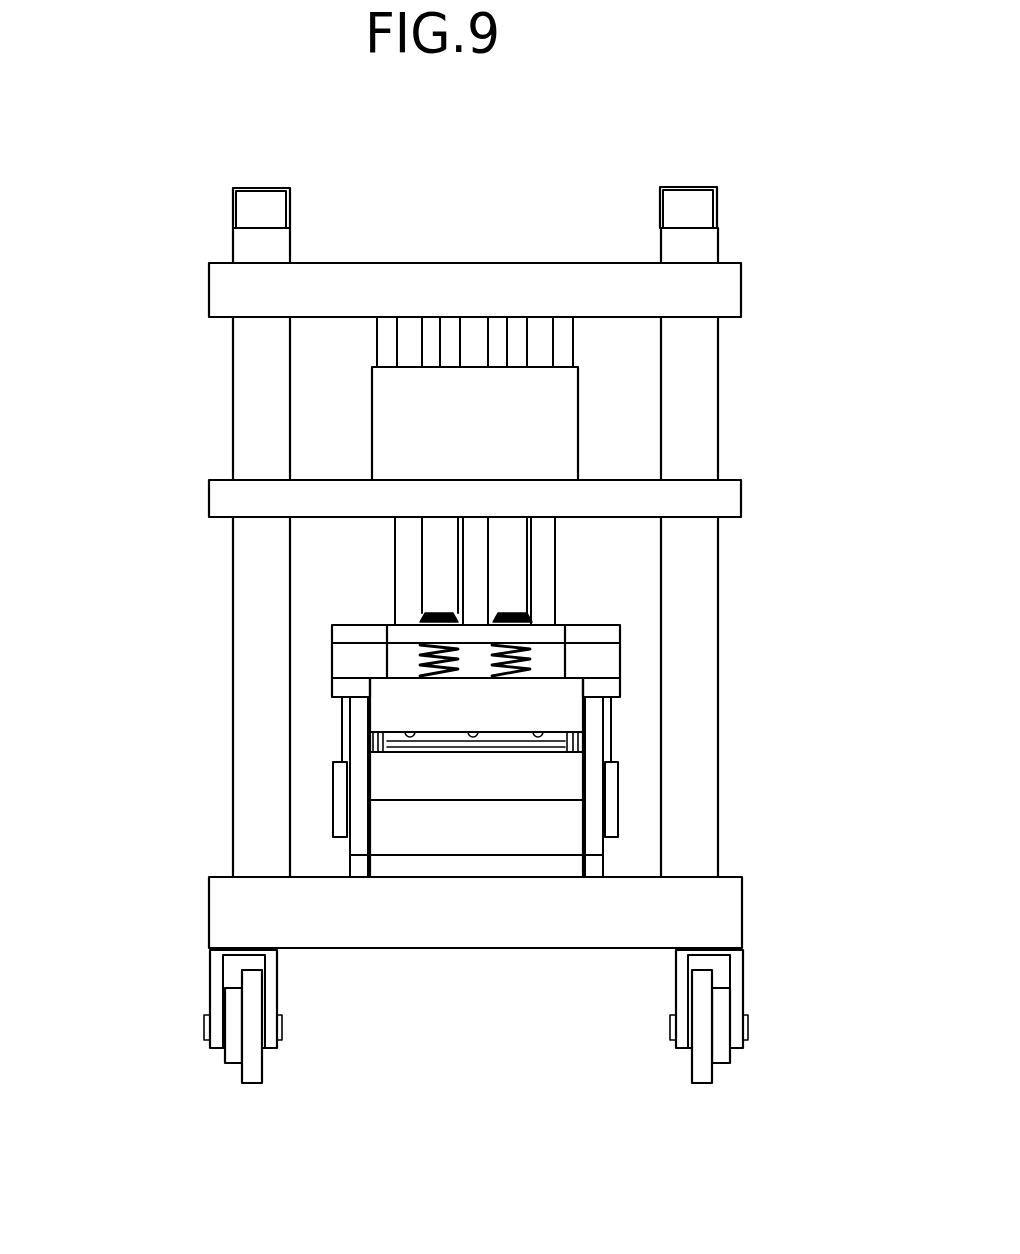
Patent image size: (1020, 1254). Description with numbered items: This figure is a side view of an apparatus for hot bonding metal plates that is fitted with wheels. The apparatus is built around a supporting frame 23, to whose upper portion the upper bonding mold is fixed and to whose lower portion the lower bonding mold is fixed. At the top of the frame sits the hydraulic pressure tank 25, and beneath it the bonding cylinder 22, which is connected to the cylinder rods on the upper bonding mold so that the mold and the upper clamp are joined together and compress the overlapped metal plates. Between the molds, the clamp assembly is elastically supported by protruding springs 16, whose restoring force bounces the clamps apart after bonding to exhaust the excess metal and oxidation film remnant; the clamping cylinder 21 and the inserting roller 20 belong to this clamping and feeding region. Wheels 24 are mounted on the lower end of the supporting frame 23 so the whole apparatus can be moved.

The protruding spring 16 is at (417, 657).
The inserting roller 20 is at (555, 785).
The clamping cylinder 21 is at (332, 657).
The bonding cylinder 22 is at (543, 342).
The supporting frame 23 is at (258, 718).
The wheel 24 is at (240, 1072).
The hydraulic pressure tank 25 is at (548, 417).